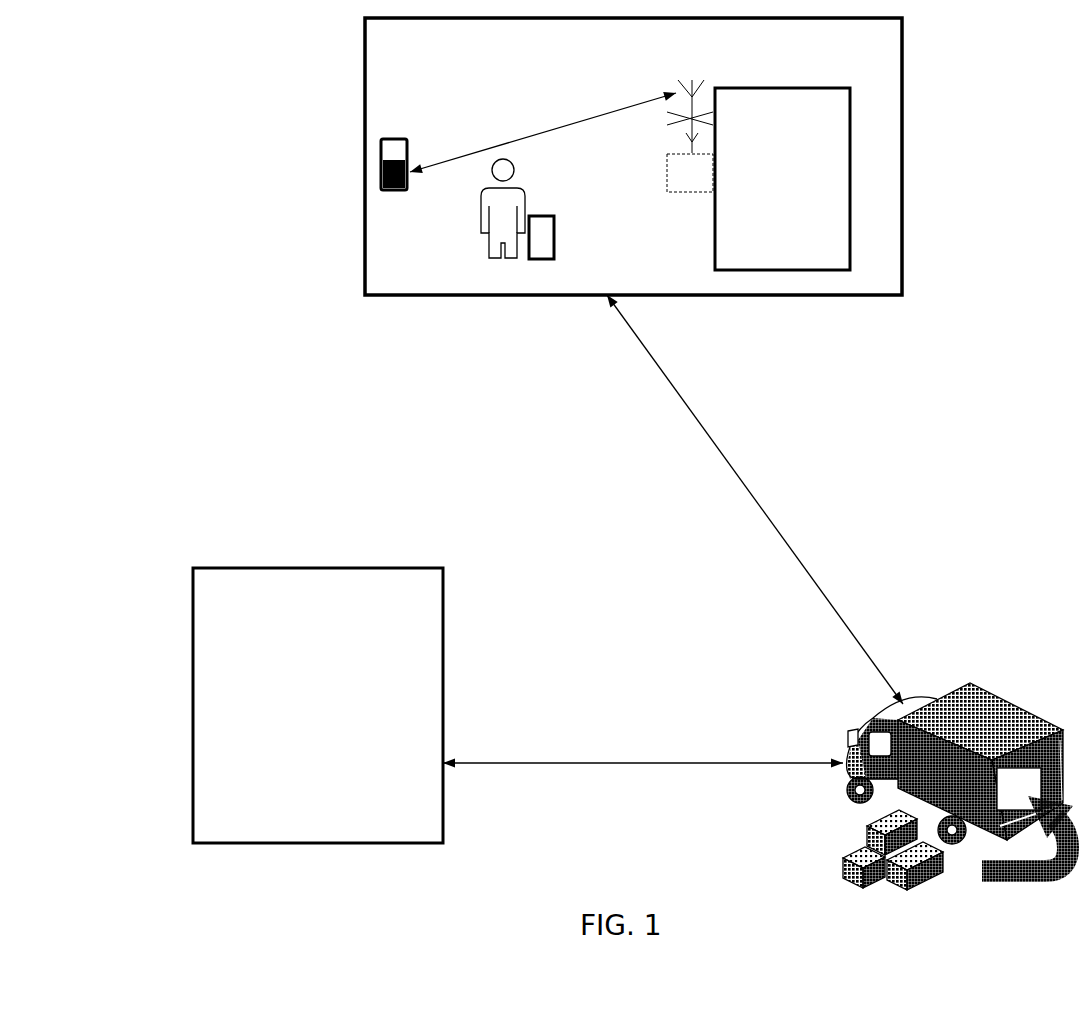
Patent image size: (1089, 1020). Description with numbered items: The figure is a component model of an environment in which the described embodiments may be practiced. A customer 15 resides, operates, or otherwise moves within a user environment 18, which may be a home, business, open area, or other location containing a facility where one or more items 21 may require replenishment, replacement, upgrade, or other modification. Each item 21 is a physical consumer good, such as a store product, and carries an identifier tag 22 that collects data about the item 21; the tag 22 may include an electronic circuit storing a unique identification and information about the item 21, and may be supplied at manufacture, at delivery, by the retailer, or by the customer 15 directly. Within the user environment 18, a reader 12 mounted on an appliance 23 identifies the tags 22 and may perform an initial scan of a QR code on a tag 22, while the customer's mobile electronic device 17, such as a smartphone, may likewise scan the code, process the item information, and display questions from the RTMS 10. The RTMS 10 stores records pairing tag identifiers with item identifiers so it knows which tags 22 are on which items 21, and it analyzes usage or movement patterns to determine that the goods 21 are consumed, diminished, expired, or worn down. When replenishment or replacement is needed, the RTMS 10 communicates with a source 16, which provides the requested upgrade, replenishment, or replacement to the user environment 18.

The RTMS 10 is at (337, 766).
The reader 12 is at (680, 193).
The customer 15 is at (525, 190).
The source 16 is at (985, 692).
The mobile electronic device 17 is at (557, 217).
The user environment 18 is at (413, 57).
The item 21 is at (392, 137).
The identifier tag 22 is at (407, 184).
The appliance 23 is at (798, 194).